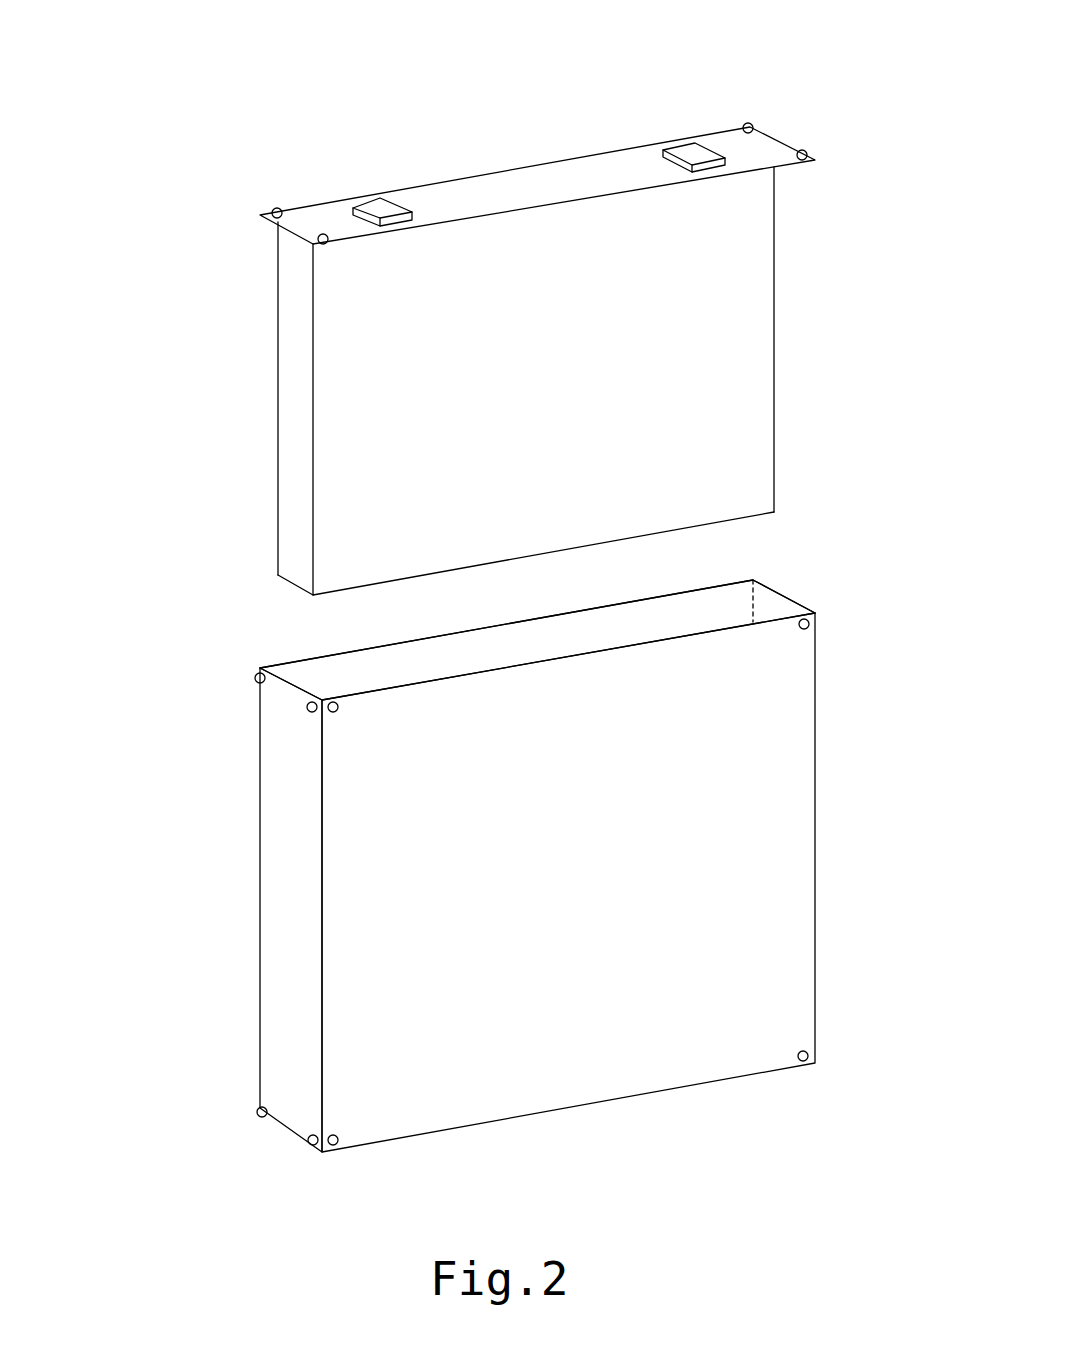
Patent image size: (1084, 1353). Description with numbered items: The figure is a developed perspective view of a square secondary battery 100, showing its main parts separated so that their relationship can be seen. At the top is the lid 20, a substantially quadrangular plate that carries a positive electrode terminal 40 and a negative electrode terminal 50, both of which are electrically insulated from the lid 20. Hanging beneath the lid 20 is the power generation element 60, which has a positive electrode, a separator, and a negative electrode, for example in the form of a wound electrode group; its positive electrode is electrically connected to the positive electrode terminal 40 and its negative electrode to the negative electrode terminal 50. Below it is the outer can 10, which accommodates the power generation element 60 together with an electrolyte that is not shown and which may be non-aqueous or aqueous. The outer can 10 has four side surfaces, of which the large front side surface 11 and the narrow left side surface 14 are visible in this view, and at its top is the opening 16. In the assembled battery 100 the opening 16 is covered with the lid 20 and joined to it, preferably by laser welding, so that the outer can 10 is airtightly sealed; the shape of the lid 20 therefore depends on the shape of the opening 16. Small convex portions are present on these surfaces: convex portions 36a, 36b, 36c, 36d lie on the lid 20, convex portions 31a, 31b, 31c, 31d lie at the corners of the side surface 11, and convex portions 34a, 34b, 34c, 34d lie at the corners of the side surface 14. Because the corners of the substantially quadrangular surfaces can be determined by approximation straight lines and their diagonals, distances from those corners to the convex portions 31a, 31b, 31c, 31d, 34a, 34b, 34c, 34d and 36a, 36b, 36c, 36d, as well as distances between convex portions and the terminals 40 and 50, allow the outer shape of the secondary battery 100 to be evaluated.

The secondary battery 100 is at (108, 144).
The lid 20 is at (490, 170).
The positive electrode terminal 40 is at (383, 210).
The negative electrode terminal 50 is at (694, 152).
The convex portion 36a is at (276, 208).
The convex portion 36b is at (322, 234).
The convex portion 36c is at (749, 123).
The convex portion 36d is at (803, 150).
The power generation element 60 is at (710, 324).
The outer can 10 is at (545, 886).
The side surface 11 is at (710, 757).
The side surface 14 is at (287, 948).
The opening 16 is at (692, 607).
The convex portion 31a is at (333, 713).
The convex portion 31b is at (809, 628).
The convex portion 31c is at (340, 1145).
The convex portion 31d is at (810, 1060).
The convex portion 34a is at (258, 682).
The convex portion 34b is at (309, 711).
The convex portion 34c is at (261, 1117).
The convex portion 34d is at (311, 1145).